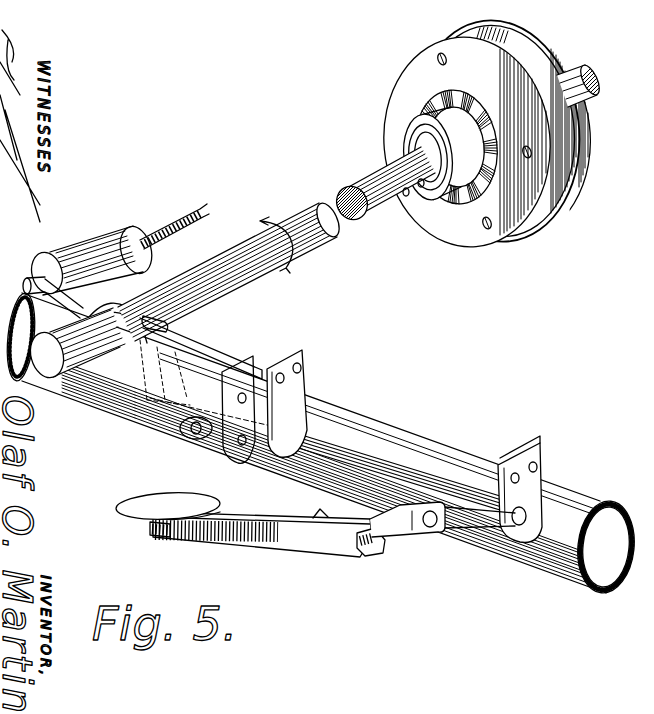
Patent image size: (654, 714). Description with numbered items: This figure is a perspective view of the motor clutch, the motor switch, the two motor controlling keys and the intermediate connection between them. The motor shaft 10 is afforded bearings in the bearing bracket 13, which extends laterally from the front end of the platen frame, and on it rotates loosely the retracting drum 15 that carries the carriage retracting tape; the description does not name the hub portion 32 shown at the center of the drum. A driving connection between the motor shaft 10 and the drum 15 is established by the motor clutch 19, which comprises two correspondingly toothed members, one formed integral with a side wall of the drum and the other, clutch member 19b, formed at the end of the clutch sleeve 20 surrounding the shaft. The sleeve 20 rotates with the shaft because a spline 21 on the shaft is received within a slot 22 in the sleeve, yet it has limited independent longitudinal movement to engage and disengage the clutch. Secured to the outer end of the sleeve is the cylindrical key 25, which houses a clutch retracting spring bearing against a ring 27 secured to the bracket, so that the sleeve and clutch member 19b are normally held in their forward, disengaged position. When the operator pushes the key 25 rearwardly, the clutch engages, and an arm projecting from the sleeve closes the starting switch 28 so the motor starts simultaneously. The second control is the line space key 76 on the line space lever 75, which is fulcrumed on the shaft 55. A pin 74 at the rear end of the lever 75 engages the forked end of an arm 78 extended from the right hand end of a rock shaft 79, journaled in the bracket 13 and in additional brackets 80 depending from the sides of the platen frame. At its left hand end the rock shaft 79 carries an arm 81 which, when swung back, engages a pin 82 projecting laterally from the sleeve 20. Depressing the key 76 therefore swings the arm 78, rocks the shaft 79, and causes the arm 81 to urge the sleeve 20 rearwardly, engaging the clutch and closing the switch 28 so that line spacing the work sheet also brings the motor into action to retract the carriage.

The motor shaft 10 is at (583, 100).
The bearing bracket 13 is at (167, 410).
The retracting drum 15 is at (555, 140).
The motor clutch 19 is at (24, 288).
The clutch member 19b is at (422, 145).
The clutch sleeve 20 is at (317, 235).
The spline 21 is at (420, 189).
The slot 22 is at (404, 196).
The key 25 is at (55, 375).
The ring 27 is at (102, 393).
The starting switch 28 is at (108, 228).
The knurled hub ring 32 is at (462, 103).
The shaft 55 is at (375, 550).
The pin 74 is at (435, 522).
The line space lever 75 is at (277, 535).
The line space key 76 is at (140, 500).
The arm 78 is at (477, 520).
The rock shaft 79 is at (400, 463).
The brackets 80 is at (300, 383).
The arm 81 is at (180, 360).
The pin 82 is at (170, 327).